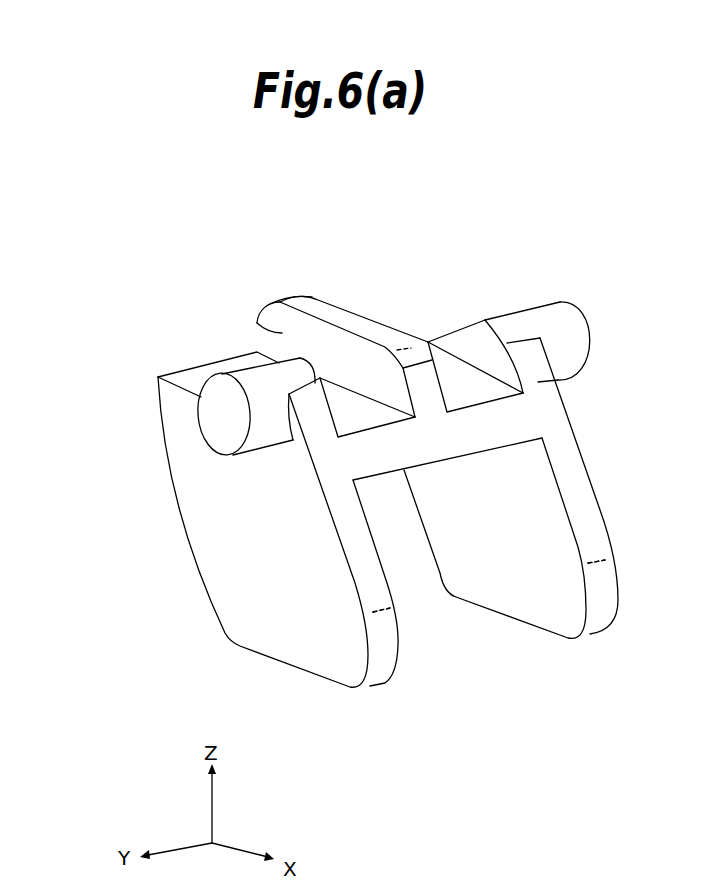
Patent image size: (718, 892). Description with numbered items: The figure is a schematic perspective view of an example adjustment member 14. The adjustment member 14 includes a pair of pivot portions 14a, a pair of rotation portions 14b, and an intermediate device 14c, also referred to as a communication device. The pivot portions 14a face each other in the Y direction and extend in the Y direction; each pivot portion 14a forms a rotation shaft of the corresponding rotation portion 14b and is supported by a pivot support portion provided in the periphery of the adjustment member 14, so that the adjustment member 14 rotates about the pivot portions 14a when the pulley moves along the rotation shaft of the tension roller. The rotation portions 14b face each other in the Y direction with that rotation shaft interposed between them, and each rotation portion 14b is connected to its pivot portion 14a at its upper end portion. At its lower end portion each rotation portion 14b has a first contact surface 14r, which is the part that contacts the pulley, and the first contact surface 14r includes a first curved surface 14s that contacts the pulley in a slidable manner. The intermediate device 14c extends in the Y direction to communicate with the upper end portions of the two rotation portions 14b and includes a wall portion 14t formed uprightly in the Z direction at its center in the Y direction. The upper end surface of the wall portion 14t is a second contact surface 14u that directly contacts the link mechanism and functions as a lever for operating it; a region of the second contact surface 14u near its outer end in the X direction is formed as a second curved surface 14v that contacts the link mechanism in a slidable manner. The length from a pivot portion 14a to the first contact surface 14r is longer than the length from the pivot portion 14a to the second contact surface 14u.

The adjustment member 14 is at (184, 284).
The pivot portion 14a is at (198, 419).
The rotation portion 14b is at (211, 589).
The intermediate device 14c is at (377, 460).
The first contact surface 14r is at (600, 603).
The first curved surface 14s is at (382, 650).
The wall portion 14t is at (256, 322).
The second contact surface 14u is at (366, 328).
The second curved surface 14v is at (278, 302).